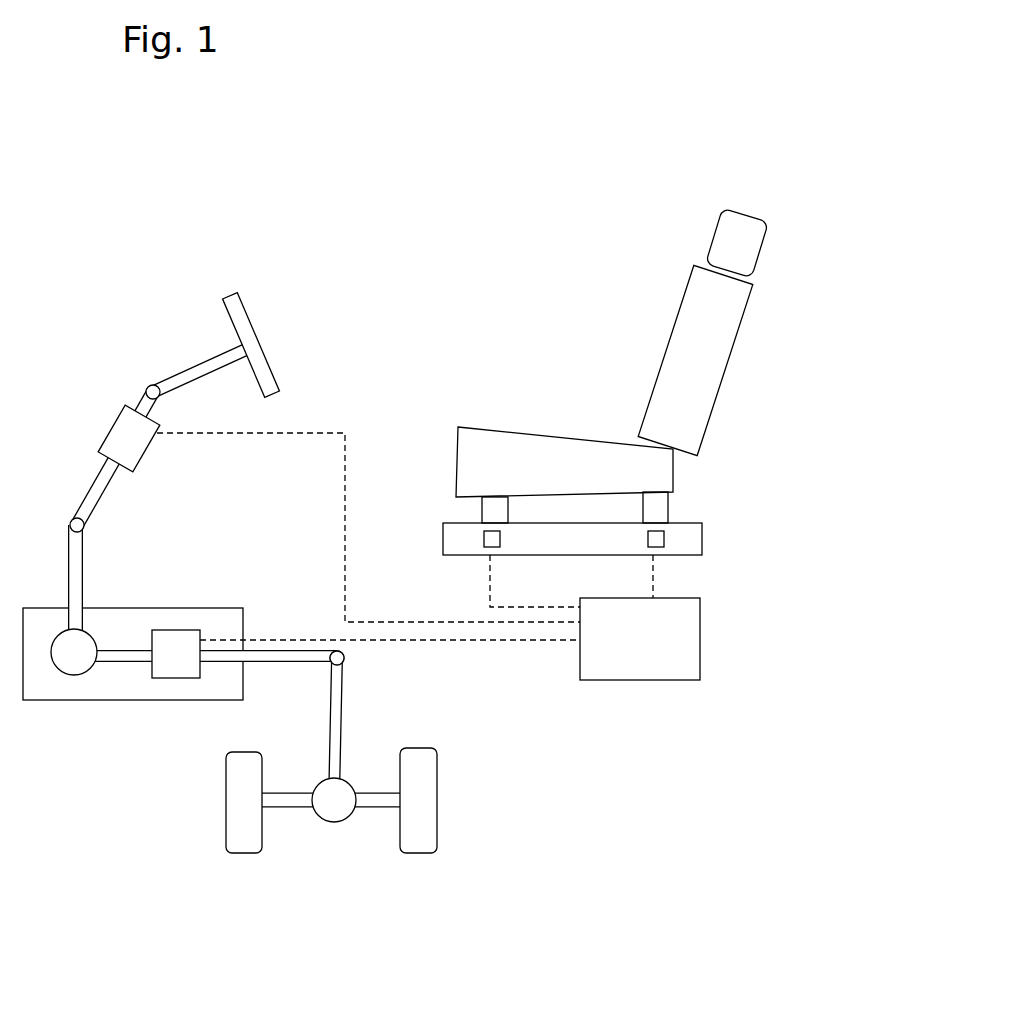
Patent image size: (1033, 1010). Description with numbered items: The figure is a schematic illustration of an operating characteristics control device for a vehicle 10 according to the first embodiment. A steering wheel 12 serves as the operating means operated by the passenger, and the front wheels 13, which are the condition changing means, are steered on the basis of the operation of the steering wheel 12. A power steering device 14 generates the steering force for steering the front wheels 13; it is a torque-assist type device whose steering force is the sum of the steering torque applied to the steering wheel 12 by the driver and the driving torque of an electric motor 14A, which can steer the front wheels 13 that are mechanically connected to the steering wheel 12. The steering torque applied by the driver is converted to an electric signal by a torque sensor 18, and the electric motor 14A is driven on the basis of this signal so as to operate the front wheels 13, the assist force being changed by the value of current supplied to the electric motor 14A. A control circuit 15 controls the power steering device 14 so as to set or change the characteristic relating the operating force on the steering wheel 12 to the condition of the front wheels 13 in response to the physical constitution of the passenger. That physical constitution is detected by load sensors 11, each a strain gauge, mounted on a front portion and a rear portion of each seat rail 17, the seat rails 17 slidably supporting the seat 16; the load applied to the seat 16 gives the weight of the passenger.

The vehicle 10 is at (488, 285).
The load sensor 11 is at (483, 537).
The steering wheel 12 is at (272, 380).
The front wheel 13 is at (253, 833).
The power steering device 14 is at (208, 564).
The electric motor 14A is at (182, 677).
The control circuit 15 is at (657, 668).
The seat 16 is at (722, 382).
The seat rail 17 is at (693, 543).
The torque sensor 18 is at (133, 450).